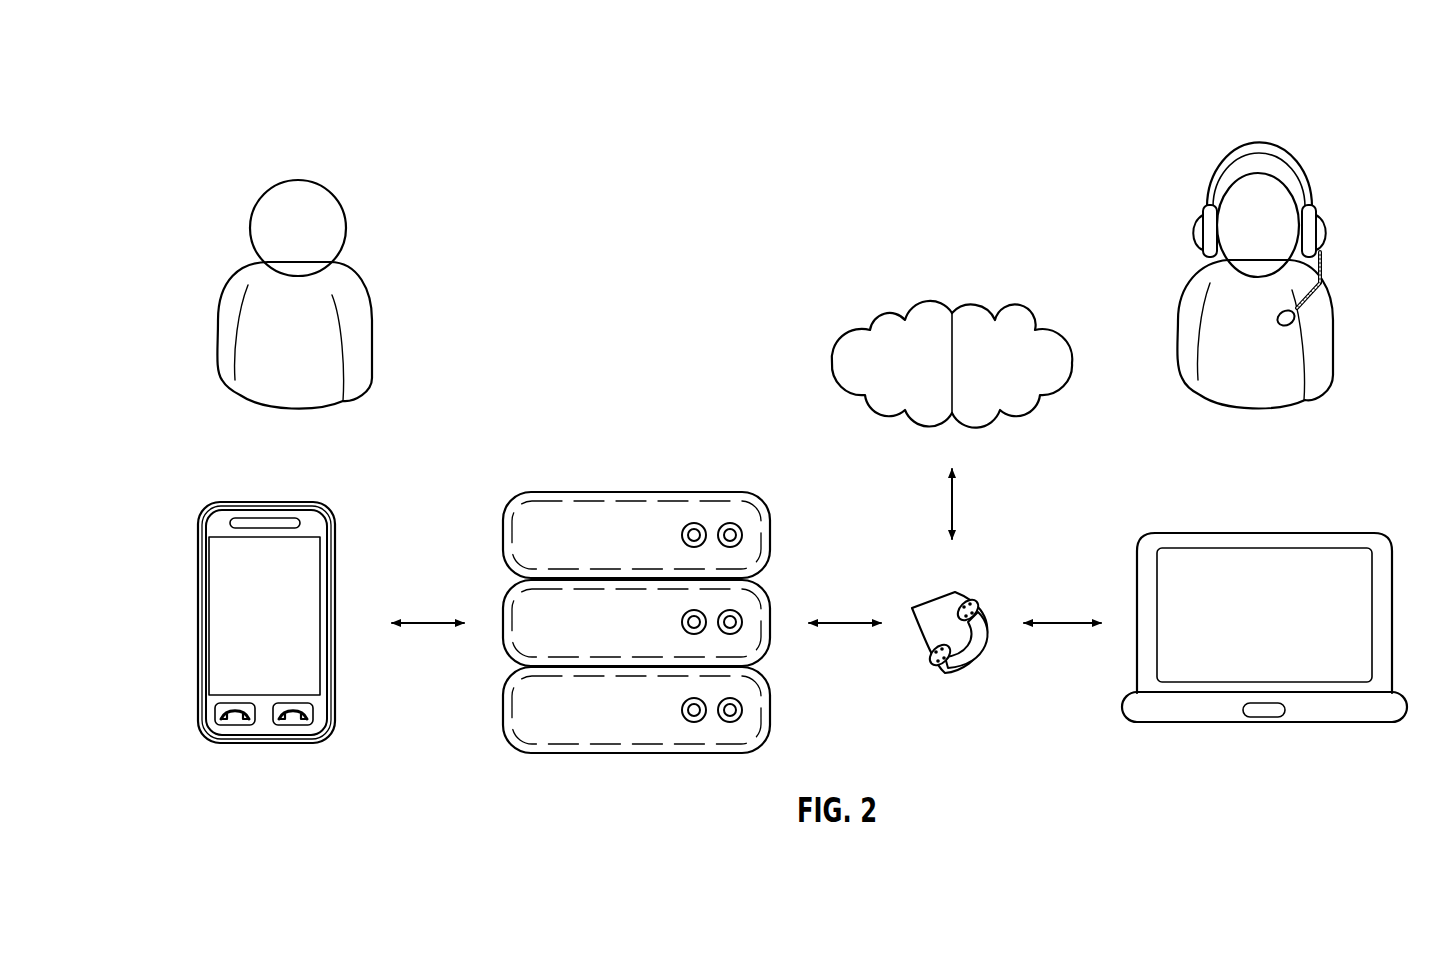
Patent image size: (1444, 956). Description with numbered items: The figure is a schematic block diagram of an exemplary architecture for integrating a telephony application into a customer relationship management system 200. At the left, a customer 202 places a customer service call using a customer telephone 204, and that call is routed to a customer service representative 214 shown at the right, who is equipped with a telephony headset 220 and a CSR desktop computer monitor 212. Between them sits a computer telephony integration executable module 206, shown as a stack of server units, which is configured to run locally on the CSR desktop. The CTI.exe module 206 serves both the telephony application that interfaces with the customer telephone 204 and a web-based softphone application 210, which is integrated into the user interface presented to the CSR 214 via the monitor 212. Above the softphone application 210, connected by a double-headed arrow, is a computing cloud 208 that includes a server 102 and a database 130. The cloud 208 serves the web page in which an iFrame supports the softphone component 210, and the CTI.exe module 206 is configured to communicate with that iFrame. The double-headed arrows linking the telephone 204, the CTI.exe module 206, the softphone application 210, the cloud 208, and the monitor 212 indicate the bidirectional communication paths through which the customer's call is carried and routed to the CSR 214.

The customer relationship management system 200 is at (290, 92).
The customer 202 is at (218, 332).
The customer telephone 204 is at (240, 503).
The computer telephony integration executable (CTI.exe) module 206 is at (575, 493).
The server 102 is at (855, 345).
The database 130 is at (1045, 348).
The computing cloud 208 is at (948, 354).
The web-based softphone application 210 is at (973, 655).
The CSR desktop computer monitor 212 is at (1330, 533).
The customer service representative (CSR) 214 is at (1340, 355).
The telephony headset 220 is at (1305, 175).